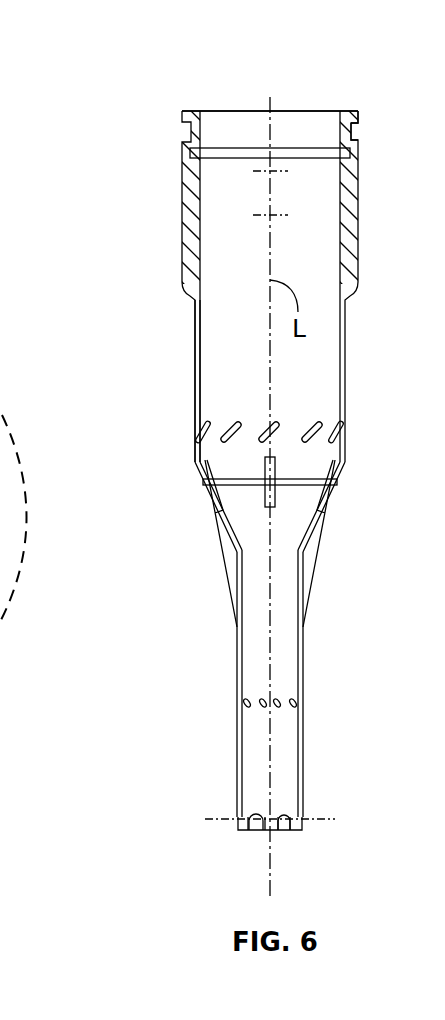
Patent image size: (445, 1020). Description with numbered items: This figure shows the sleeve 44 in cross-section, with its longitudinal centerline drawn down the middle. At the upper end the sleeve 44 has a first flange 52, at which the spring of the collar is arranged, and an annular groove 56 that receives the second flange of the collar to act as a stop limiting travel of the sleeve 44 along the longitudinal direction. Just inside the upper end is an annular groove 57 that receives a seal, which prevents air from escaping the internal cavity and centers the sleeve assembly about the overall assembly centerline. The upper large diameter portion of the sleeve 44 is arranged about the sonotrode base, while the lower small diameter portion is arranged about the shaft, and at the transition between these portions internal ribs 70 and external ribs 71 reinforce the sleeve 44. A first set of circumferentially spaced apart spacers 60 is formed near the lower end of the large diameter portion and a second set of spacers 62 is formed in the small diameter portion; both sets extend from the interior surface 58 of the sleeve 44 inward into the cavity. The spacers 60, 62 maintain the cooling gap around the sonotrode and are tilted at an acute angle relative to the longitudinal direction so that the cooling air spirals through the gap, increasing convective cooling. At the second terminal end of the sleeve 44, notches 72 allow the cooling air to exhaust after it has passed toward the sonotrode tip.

The sleeve 44 is at (366, 262).
The first flange 52 is at (356, 113).
The annular groove 56 is at (354, 130).
The annular groove 57 is at (233, 152).
The interior surface 58 is at (200, 265).
The first set of spacers 60 is at (238, 424).
The second set of spacers 62 is at (247, 706).
The internal ribs 70 is at (198, 483).
The external ribs 71 is at (313, 550).
The notches 72 is at (258, 832).